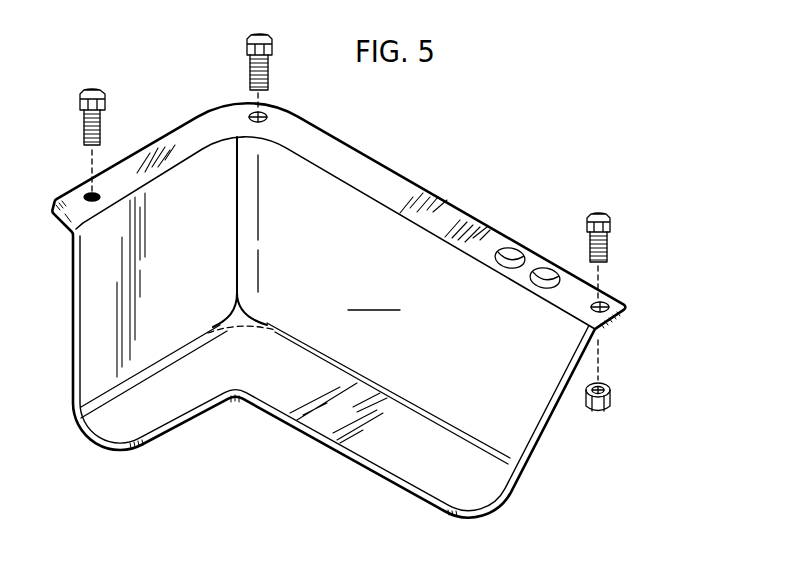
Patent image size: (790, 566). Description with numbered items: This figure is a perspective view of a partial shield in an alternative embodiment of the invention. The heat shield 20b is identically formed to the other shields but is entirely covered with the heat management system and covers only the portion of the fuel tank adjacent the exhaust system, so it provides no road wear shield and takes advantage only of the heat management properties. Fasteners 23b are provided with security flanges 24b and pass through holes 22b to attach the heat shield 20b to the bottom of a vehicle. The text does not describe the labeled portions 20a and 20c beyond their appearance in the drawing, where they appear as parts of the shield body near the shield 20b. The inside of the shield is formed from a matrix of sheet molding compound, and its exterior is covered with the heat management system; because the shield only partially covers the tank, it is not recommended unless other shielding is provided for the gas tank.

The side wall of corner bracket 20a is at (553, 428).
The heat shield 20b is at (632, 313).
The corner bracket 20c is at (338, 310).
The holes 22b is at (612, 297).
The fasteners 23b is at (597, 212).
The security flanges 24b is at (399, 190).